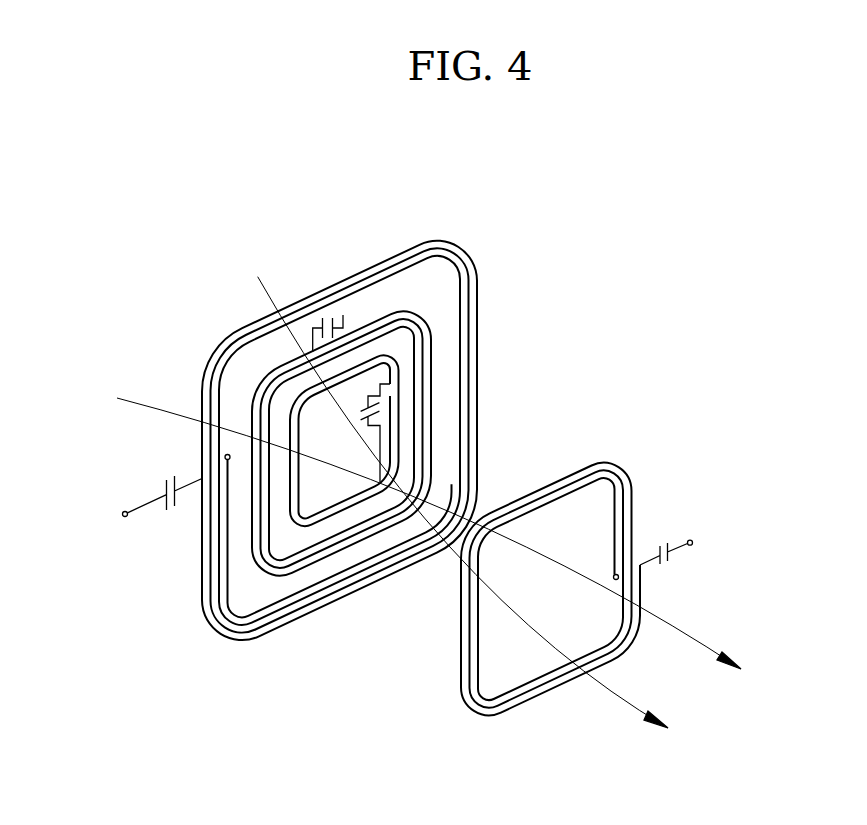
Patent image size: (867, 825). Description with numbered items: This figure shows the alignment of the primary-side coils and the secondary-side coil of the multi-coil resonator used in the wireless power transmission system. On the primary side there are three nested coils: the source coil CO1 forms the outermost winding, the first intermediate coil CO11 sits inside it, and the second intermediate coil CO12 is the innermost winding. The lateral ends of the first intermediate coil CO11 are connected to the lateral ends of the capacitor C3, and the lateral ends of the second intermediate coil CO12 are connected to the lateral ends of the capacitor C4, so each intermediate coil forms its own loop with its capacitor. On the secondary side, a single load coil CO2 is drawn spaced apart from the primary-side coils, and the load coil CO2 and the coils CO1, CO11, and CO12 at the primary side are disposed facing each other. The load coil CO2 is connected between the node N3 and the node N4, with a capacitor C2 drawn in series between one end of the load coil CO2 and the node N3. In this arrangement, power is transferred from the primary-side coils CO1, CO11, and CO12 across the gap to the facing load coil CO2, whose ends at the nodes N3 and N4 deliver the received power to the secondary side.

The source coil CO1 is at (294, 304).
The first intermediate coil CO11 is at (416, 306).
The second intermediate coil CO12 is at (396, 355).
The load coil CO2 is at (621, 459).
The second capacitor C2 is at (664, 541).
The capacitor C3 is at (346, 326).
The capacitor C4 is at (362, 433).
The node N3 is at (706, 543).
The node N4 is at (602, 578).